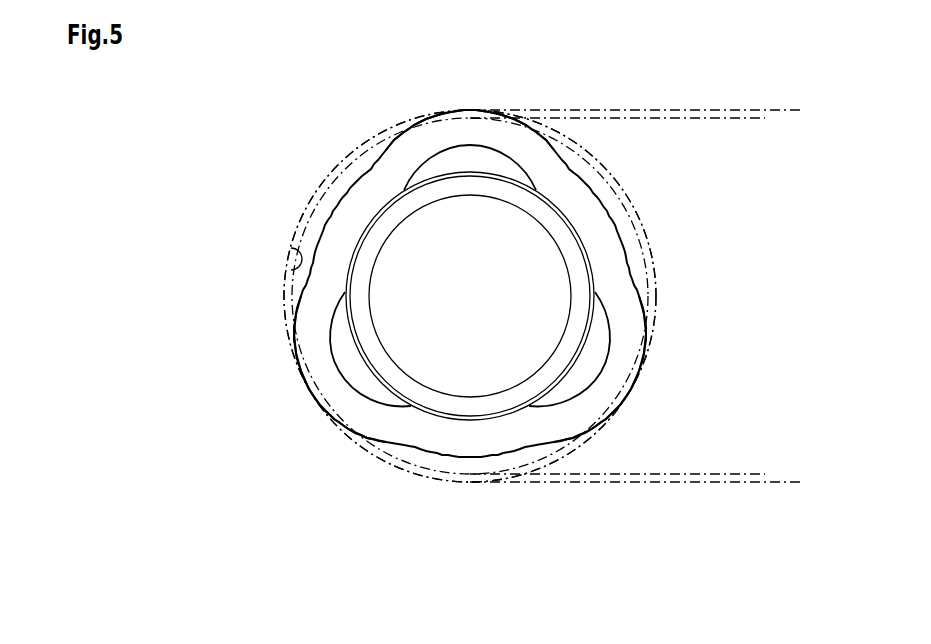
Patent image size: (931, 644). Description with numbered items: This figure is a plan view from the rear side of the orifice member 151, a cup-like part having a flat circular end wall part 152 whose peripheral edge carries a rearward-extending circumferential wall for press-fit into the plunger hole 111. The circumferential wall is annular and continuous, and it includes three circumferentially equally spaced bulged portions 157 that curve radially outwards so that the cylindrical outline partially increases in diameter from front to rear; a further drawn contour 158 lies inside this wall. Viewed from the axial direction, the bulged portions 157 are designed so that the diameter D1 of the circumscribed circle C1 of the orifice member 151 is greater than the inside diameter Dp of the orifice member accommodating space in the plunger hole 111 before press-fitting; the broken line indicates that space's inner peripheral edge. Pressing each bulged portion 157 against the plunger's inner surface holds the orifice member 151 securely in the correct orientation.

The plunger hole 111 is at (284, 273).
The orifice member 151 is at (362, 171).
The end wall part 152 is at (446, 353).
The bulged portions 157 is at (468, 108).
The recessed portion 158 is at (603, 202).
The circumscribed circle C1 is at (309, 197).
The inside diameter of the orifice member accommodating space Dp is at (756, 118).
The diameter of the circumscribed circle D1 is at (797, 110).